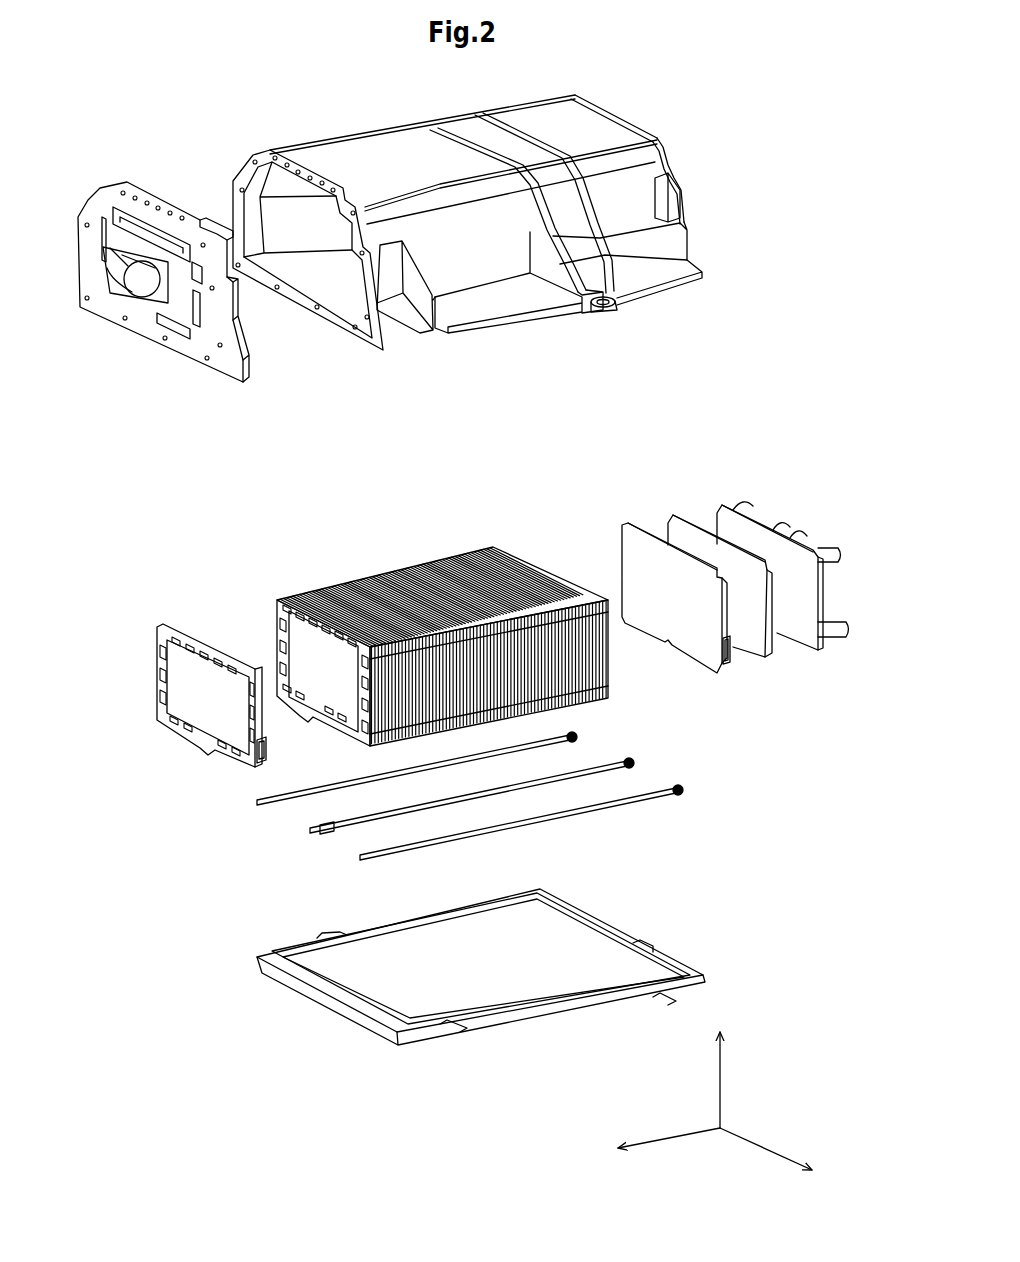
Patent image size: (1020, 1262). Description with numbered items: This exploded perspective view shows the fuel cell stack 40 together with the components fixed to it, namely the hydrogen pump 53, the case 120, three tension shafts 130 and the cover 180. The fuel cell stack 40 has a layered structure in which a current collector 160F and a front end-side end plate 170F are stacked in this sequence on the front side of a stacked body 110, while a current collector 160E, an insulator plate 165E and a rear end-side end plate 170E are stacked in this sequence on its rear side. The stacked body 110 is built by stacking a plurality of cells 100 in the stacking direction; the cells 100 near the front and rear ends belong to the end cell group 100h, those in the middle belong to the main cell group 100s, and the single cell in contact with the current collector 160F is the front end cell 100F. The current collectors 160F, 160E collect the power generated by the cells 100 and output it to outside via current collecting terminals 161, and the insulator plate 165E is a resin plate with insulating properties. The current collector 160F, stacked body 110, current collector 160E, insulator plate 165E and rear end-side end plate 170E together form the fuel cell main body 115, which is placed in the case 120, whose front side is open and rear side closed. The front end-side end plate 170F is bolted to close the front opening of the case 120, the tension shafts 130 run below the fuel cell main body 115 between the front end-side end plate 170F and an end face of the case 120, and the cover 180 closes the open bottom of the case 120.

The hydrogen pump 53 is at (108, 212).
The case 120 is at (593, 103).
The front end-side end plate 170F is at (240, 350).
The fuel cell main body 115 is at (227, 297).
The fuel cell stack 40 is at (388, 387).
The stacked body 110 is at (766, 392).
The cell 100 is at (472, 718).
The main cell group 100s is at (470, 550).
The end cell group 100h is at (333, 598).
The front end cell 100F is at (303, 642).
The current collector 160F is at (163, 627).
The current collector 160E is at (632, 528).
The insulator plate 165E is at (680, 520).
The rear end-side end plate 170E is at (725, 508).
The current collecting terminal 161 is at (267, 742).
The tension shaft 130 is at (360, 858).
The cover 180 is at (553, 1018).